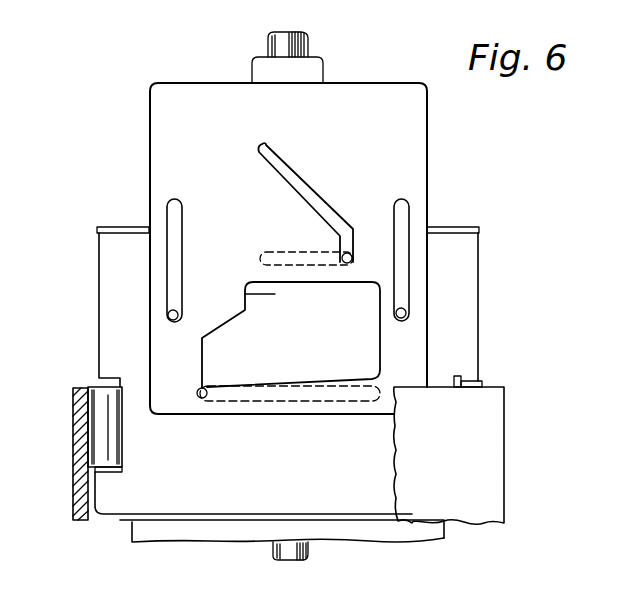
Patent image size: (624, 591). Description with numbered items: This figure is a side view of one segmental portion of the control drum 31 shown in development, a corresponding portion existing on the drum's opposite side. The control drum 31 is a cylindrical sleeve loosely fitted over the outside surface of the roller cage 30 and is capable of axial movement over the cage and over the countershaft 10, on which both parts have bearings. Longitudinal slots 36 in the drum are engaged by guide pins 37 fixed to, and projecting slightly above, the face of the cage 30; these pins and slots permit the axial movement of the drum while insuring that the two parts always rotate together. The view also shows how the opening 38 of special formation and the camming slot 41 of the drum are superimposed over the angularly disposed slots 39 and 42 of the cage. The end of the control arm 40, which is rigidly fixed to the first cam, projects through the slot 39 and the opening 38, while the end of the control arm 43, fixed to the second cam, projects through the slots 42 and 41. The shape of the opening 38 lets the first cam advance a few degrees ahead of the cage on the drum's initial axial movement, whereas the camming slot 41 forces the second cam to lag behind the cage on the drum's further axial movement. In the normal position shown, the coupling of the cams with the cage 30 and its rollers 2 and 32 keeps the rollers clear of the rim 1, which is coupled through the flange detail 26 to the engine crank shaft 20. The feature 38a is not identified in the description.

The rim 1 is at (78, 388).
The roller 2 is at (95, 437).
The countershaft 10 is at (308, 43).
The crank shaft 20 is at (306, 557).
The flange detail 26 is at (389, 538).
The roller cage 30 is at (108, 340).
The control drum 31 is at (149, 138).
The roller 32 is at (482, 386).
The longitudinal slot 36 is at (167, 222).
The guide pin 37 is at (168, 312).
The opening 38 is at (253, 315).
The cam plate edge 38a is at (281, 297).
The angularly disposed slot 39 is at (272, 398).
The control arm 40 is at (205, 398).
The camming slot 41 is at (300, 185).
The angularly disposed slot 42 is at (283, 257).
The control arm 43 is at (352, 257).